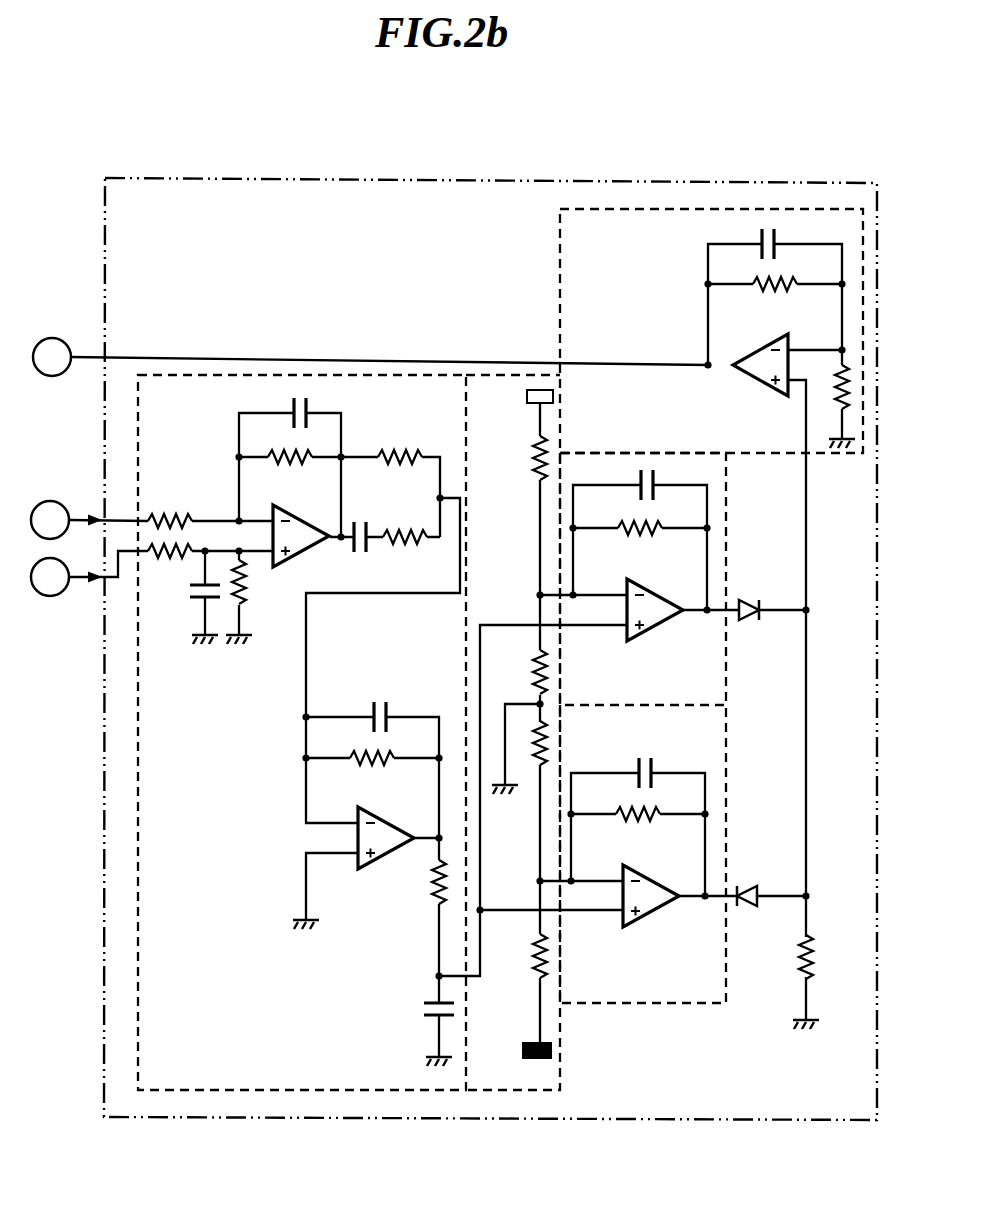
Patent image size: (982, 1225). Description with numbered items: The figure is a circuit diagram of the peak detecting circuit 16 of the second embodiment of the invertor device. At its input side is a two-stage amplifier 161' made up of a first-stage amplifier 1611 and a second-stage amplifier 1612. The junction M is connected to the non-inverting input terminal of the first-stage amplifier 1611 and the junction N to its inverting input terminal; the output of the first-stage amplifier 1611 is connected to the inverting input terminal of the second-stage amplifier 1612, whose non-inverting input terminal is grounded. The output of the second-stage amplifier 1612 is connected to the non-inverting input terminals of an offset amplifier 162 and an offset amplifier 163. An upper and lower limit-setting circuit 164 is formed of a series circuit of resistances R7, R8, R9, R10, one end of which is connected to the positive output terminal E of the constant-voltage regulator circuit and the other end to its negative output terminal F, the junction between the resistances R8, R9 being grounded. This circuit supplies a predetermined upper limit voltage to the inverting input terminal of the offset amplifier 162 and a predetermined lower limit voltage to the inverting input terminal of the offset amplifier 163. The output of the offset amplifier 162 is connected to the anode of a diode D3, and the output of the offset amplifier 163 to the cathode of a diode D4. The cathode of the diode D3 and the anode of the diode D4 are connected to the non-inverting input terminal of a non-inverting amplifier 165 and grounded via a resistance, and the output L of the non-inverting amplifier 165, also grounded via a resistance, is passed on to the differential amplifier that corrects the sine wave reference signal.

The peak detecting circuit 16 is at (287, 180).
The two-stage amplifier 161' is at (250, 732).
The first-stage amplifier 1611 is at (284, 566).
The second-stage amplifier 1612 is at (377, 866).
The offset amplifier 162 is at (726, 660).
The offset amplifier 163 is at (660, 1003).
The upper and lower limit-setting circuit 164 is at (557, 1040).
The non-inverting amplifier 165 is at (560, 297).
The resistance R7 is at (524, 458).
The resistance R8 is at (524, 672).
The resistance R9 is at (543, 753).
The resistance R10 is at (518, 956).
The diode D3 is at (772, 594).
The diode D4 is at (771, 880).
The positive output terminal E is at (523, 404).
The negative output terminal F is at (525, 1053).
The output L is at (370, 357).
The junction N is at (89, 520).
The junction M is at (89, 573).